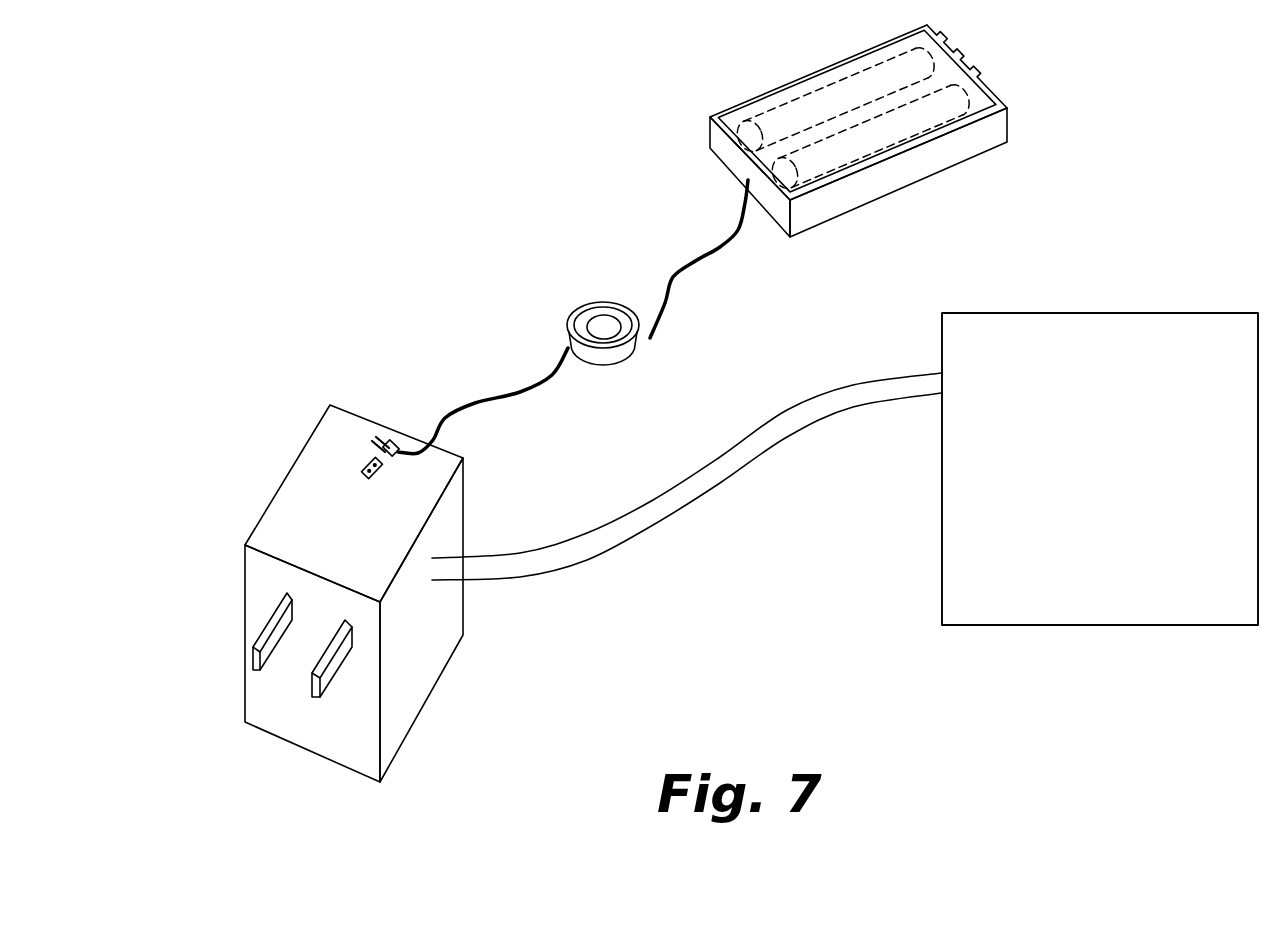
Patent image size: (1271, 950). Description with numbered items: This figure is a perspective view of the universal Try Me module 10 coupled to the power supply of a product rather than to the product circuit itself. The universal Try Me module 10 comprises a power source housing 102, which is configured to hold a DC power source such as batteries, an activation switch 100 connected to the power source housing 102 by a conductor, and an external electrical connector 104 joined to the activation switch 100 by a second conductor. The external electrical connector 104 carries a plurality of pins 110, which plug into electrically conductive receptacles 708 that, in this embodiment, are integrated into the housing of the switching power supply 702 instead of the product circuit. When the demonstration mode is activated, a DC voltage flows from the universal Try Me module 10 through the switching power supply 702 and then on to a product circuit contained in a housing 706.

The universal Try Me module 10 is at (540, 172).
The activation switch 100 is at (577, 310).
The power source housing 102 is at (706, 128).
The external electrical connector 104 is at (395, 444).
The pins 110 is at (370, 443).
The switching power supply 702 is at (272, 495).
The housing 706 is at (1135, 312).
The electrically conductive receptacles 708 is at (368, 458).